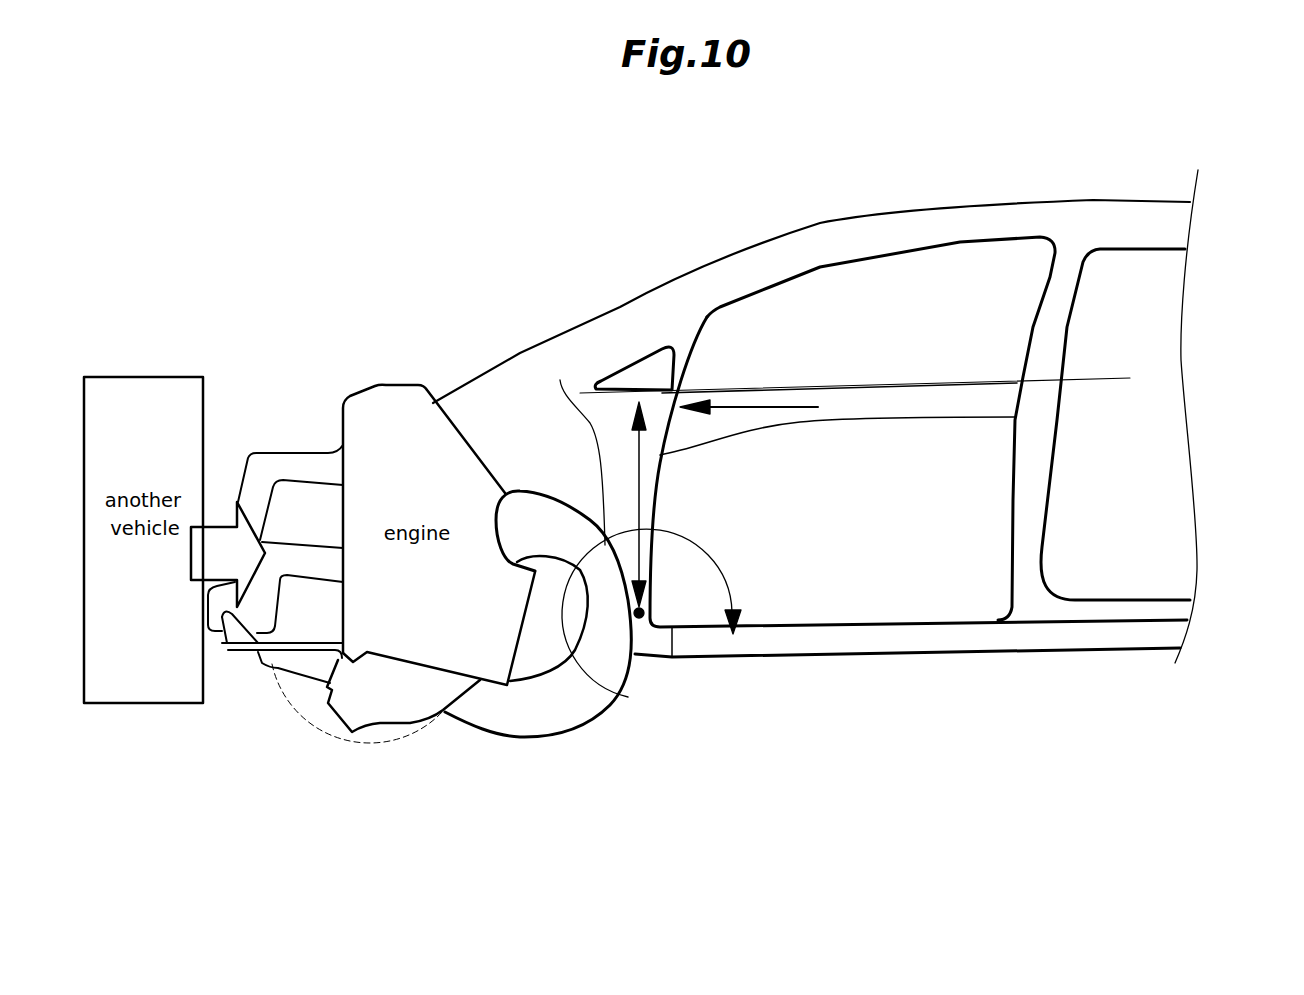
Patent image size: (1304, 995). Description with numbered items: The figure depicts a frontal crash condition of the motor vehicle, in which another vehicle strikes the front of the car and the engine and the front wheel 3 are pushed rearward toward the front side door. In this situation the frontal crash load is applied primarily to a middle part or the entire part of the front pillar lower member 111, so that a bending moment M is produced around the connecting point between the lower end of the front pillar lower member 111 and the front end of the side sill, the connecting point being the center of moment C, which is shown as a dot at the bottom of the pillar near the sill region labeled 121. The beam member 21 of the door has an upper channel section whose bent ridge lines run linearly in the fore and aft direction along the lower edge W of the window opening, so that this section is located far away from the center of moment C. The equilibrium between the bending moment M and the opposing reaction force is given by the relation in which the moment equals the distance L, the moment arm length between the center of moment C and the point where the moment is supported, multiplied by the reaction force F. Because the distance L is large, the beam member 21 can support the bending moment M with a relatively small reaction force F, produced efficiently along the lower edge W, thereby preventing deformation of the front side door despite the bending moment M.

The front wheel 3 is at (563, 713).
The beam member 21 is at (847, 410).
The front pillar lower member 111 is at (630, 566).
The side sill 121 is at (862, 640).
The reaction force F is at (739, 405).
The distance (moment arm length) L is at (637, 473).
The bending moment M is at (718, 567).
The lower edge of the window opening W is at (1108, 375).
The center of moment C is at (640, 620).